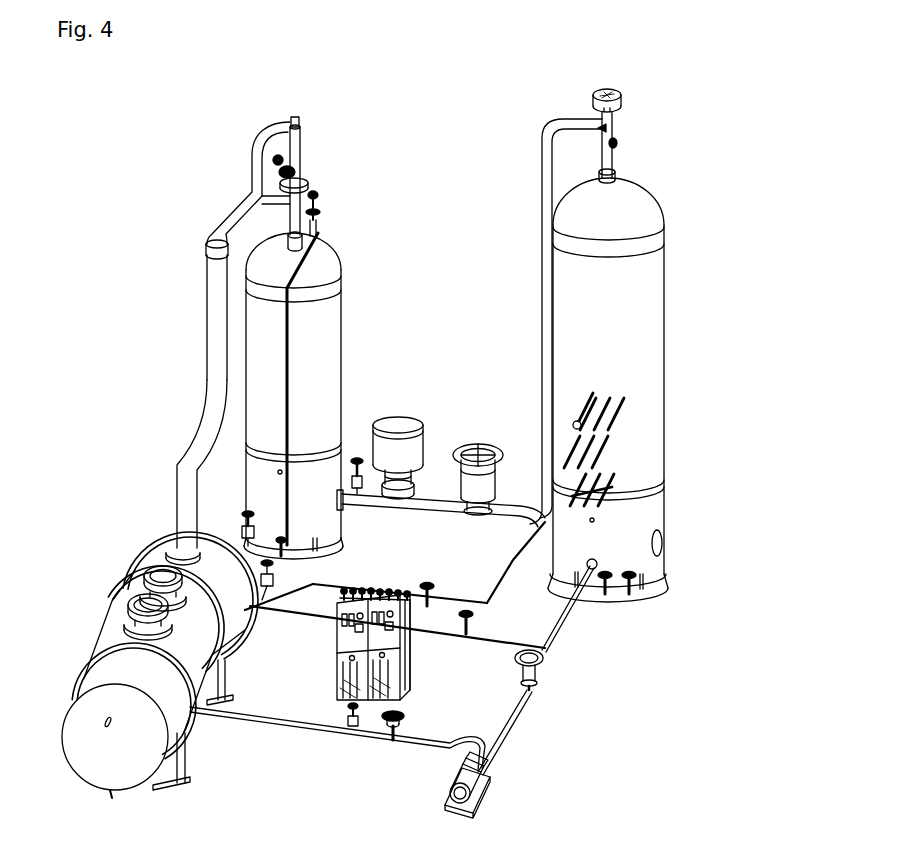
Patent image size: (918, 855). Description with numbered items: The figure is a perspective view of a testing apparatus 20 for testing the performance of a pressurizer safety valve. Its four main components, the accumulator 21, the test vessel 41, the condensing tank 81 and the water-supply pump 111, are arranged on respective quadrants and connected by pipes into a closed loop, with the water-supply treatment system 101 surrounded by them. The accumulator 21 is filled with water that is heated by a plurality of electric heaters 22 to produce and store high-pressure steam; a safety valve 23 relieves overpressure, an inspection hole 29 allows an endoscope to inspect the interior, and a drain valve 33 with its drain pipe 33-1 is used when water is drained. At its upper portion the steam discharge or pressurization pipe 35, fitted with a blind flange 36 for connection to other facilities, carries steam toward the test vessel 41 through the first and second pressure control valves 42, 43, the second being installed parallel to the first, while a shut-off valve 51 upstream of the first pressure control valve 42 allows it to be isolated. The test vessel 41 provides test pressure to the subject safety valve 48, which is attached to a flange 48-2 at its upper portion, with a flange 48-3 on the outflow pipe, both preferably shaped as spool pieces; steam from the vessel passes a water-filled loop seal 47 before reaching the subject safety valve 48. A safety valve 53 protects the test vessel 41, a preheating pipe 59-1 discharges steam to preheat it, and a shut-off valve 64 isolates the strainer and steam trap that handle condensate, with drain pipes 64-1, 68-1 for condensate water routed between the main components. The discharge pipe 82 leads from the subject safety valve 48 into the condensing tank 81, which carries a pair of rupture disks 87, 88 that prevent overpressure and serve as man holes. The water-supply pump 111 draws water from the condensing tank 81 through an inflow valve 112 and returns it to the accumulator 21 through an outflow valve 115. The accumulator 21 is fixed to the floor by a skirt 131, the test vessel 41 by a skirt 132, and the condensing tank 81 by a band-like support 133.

The testing apparatus 20 is at (716, 660).
The accumulator 21 is at (665, 262).
The electric heaters 22 is at (600, 442).
The safety valve 23 is at (620, 146).
The inspection hole 29 is at (600, 394).
The drain valve 33 is at (478, 620).
The drain pipe 33-1 is at (496, 645).
The steam discharge or pressurization pipe 35 is at (572, 125).
The blind flange 36 is at (622, 103).
The test vessel 41 is at (342, 332).
The first pressure control valve 42 is at (398, 418).
The second pressure control valve 43 is at (436, 445).
The loop seal 47 is at (252, 172).
The subject safety valve 48 is at (302, 152).
The flange 48-2 is at (305, 180).
The flange of the outflow pipe 48-3 is at (262, 150).
The shut-off valve 51 is at (466, 443).
The safety valve 53 is at (322, 206).
The preheating pipe 59-1 is at (300, 266).
The shut-off valve 64 is at (427, 586).
The drain pipe for condensate water 64-1 is at (508, 557).
The drain pipe for condensate water 68-1 is at (240, 530).
The condensing tank 81 is at (68, 752).
The discharge pipe 82 is at (207, 268).
The rupture disk 87 is at (156, 566).
The rupture disk 88 is at (122, 597).
The water-supply treatment system 101 is at (340, 645).
The water-supply pump 111 is at (490, 792).
The inflow valve 112 is at (408, 713).
The outflow valve 115 is at (546, 664).
The skirt 131 is at (662, 505).
The skirt 132 is at (245, 458).
The band-like support 133 is at (187, 760).